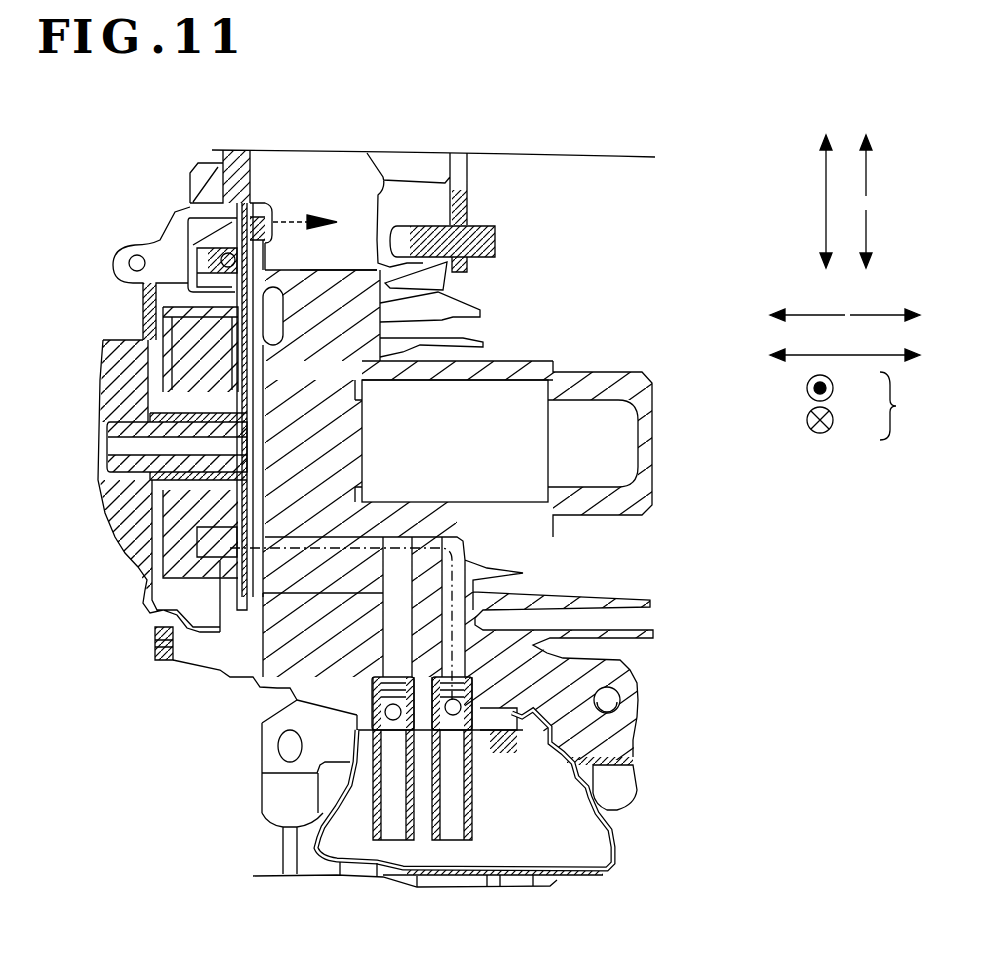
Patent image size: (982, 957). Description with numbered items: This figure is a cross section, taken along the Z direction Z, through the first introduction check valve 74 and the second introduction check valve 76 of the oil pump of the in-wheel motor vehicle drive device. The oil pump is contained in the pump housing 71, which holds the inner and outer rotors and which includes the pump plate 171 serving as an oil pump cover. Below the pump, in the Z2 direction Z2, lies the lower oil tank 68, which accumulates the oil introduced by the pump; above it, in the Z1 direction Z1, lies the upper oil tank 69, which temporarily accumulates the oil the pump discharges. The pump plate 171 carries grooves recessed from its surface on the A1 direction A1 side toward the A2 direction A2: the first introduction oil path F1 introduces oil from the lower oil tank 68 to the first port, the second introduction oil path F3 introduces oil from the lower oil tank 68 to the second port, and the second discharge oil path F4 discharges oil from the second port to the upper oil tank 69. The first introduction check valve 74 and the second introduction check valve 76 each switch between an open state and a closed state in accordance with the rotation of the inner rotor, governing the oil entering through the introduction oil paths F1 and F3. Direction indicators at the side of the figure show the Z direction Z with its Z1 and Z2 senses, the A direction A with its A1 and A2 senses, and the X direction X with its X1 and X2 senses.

The pump plate 171 is at (245, 152).
The upper oil tank 69 is at (352, 166).
The pump housing 71 is at (100, 390).
The first introduction check valve 74 is at (482, 710).
The second introduction check valve 76 is at (365, 723).
The lower oil tank 68 is at (575, 838).
The first introduction oil path F1 is at (475, 558).
The second introduction oil path F3 is at (280, 688).
The second discharge oil path F4 is at (140, 281).
The Z direction Z is at (833, 201).
The Z1 direction Z1 is at (884, 165).
The Z2 direction Z2 is at (884, 239).
The A direction A is at (845, 343).
The A1 direction A1 is at (885, 303).
The A2 direction A2 is at (807, 303).
The X direction X is at (897, 406).
The X1 direction X1 is at (838, 388).
The X2 direction X2 is at (838, 421).